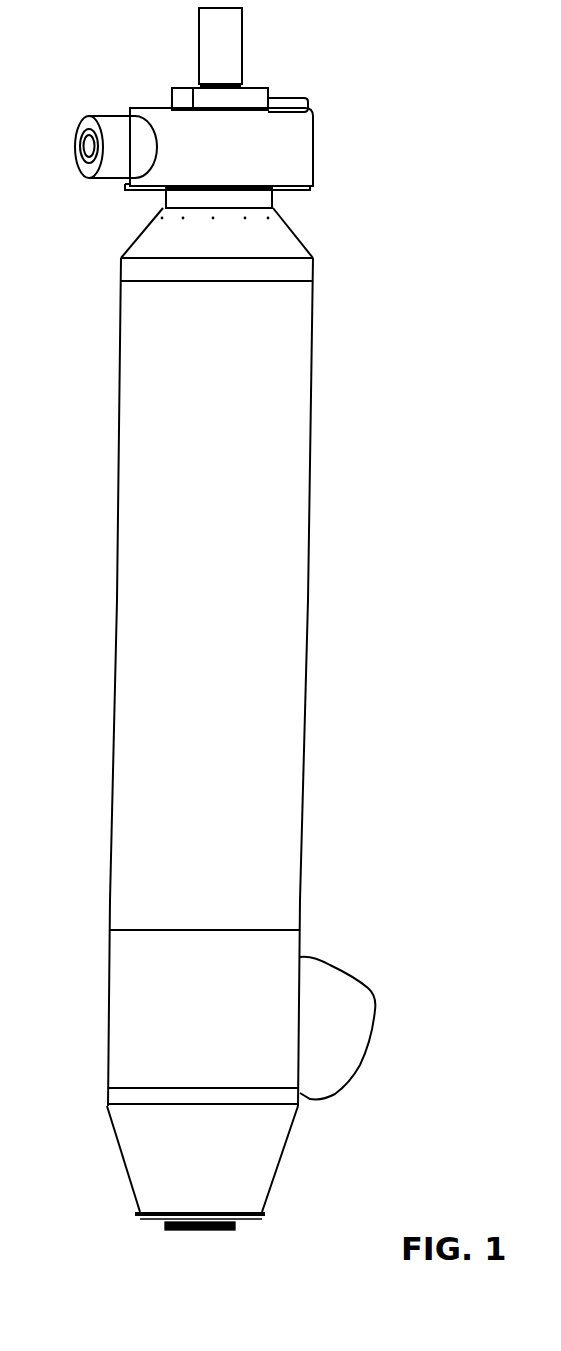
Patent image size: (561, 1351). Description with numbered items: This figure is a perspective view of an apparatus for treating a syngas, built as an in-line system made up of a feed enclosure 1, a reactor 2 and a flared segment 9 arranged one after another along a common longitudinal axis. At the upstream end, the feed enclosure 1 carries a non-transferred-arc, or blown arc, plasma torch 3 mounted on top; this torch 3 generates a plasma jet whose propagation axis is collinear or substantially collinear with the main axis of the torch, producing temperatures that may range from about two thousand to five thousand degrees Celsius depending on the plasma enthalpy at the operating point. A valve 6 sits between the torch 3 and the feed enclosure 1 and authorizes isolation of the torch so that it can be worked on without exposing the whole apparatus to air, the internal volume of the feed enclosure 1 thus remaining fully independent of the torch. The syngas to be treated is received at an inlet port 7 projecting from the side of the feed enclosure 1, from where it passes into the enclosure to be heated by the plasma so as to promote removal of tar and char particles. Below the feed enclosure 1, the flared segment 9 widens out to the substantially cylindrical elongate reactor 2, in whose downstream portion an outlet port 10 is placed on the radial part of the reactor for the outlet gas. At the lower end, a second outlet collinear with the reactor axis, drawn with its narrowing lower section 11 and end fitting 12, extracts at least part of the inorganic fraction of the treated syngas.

The feed enclosure 1 is at (52, 112).
The reactor 2 is at (52, 300).
The plasma torch 3 is at (243, 40).
The valve 6 is at (262, 88).
The inlet port 7 is at (82, 126).
The flared segment 9 is at (52, 196).
The outlet port 10 is at (366, 1055).
The lower conical section 11 is at (277, 1180).
The outlet nozzle 12 is at (220, 1232).